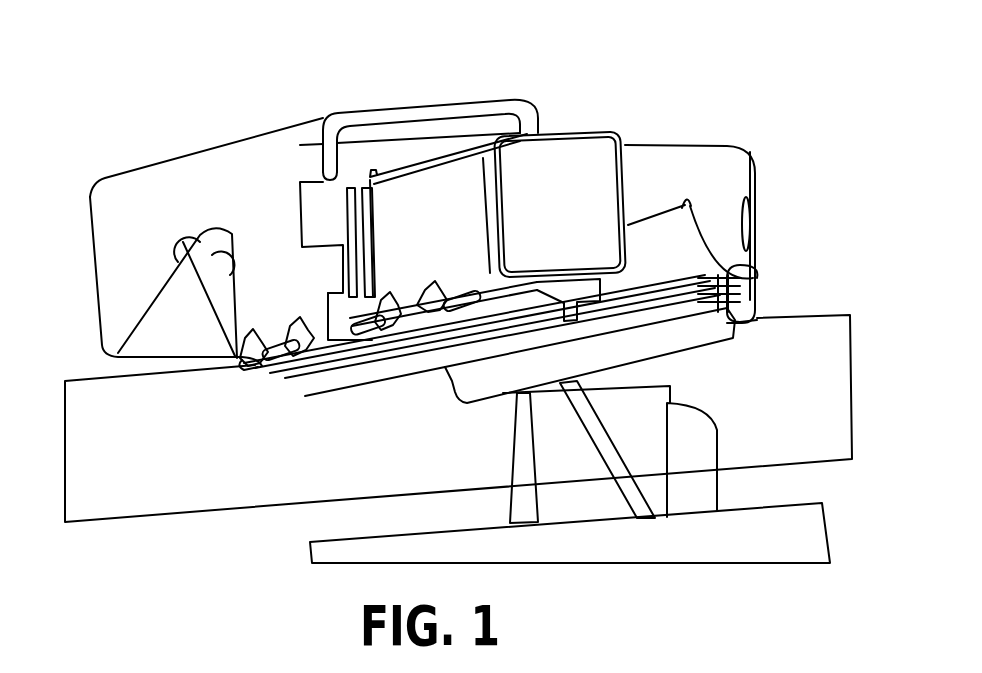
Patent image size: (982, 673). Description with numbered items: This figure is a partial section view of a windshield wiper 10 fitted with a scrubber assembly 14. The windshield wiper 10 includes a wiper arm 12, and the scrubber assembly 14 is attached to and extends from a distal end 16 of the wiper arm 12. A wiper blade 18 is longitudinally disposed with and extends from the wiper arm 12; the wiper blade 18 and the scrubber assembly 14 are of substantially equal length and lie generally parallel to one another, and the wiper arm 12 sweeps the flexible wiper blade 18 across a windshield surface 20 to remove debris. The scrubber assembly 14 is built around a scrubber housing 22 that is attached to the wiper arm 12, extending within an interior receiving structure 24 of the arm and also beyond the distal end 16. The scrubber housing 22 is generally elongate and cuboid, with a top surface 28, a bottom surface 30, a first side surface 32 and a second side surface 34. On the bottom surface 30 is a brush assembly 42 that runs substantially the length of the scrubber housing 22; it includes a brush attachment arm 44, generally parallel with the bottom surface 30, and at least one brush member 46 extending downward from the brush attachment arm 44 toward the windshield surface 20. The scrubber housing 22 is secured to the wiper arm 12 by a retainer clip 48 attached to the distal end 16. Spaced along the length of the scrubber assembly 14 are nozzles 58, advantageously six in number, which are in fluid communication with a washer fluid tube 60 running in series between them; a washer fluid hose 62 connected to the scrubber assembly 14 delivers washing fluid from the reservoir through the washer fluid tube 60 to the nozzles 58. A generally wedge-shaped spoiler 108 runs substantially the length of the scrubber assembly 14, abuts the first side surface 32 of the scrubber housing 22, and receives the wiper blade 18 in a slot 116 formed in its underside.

The windshield wiper 10 is at (240, 127).
The wiper arm 12 is at (268, 130).
The scrubber assembly 14 is at (595, 156).
The distal end 16 is at (527, 97).
The wiper blade 18 is at (709, 349).
The windshield surface 20 is at (803, 316).
The scrubber housing 22 is at (567, 158).
The interior receiving structure 24 is at (393, 132).
The top surface 28 is at (535, 150).
The bottom surface 30 is at (640, 279).
The first side surface 32 is at (628, 170).
The second side surface 34 is at (448, 192).
The brush assembly 42 is at (378, 383).
The brush attachment arm 44 is at (437, 325).
The brush member 46 is at (450, 345).
The retainer clip 48 is at (338, 308).
The nozzles 58 is at (300, 335).
The washer fluid tube 60 is at (368, 323).
The washer fluid hose 62 is at (620, 459).
The spoiler 108 is at (764, 278).
The slot 116 is at (733, 263).